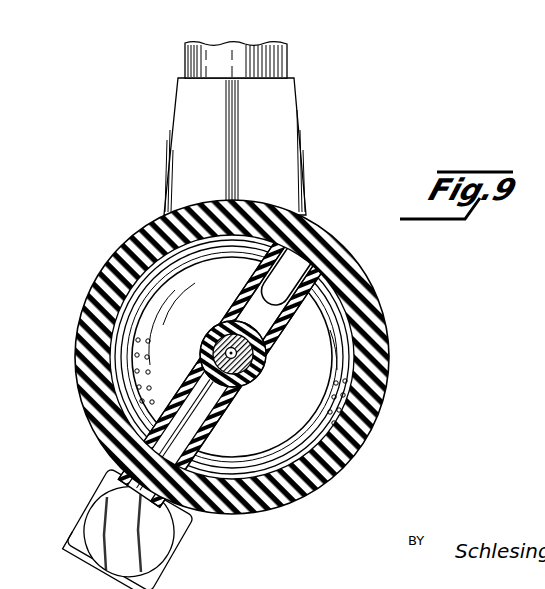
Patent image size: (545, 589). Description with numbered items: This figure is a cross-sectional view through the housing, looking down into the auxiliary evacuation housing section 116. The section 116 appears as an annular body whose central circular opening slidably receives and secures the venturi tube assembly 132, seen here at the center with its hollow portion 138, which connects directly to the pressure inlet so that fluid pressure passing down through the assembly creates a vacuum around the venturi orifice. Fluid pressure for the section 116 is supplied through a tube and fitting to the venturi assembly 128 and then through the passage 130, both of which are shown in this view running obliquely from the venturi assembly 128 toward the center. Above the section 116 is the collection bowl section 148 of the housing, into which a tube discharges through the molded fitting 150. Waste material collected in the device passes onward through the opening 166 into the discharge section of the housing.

The auxiliary evacuation housing section 116 is at (101, 293).
The venturi assembly 128 is at (182, 553).
The passage 130 is at (200, 418).
The venturi tube assembly 132 is at (262, 362).
The hollow portion 138 is at (214, 348).
The collection bowl section 148 is at (290, 139).
The molded fitting 150 is at (219, 61).
The opening 166 is at (470, 0).